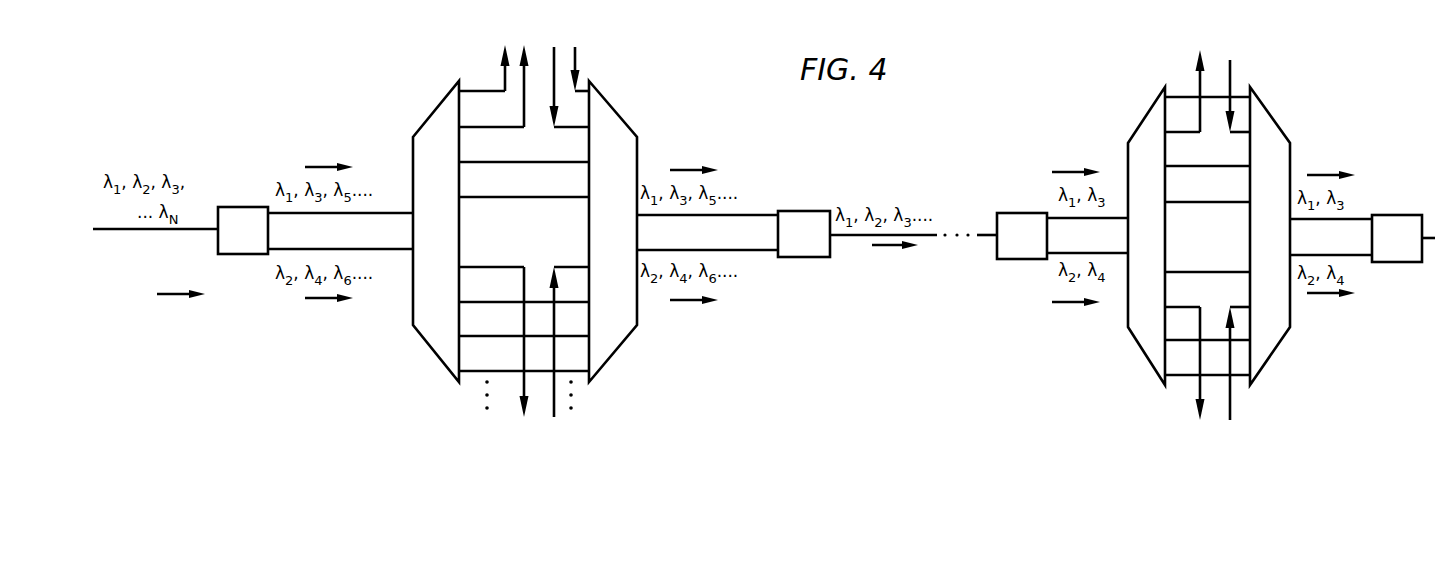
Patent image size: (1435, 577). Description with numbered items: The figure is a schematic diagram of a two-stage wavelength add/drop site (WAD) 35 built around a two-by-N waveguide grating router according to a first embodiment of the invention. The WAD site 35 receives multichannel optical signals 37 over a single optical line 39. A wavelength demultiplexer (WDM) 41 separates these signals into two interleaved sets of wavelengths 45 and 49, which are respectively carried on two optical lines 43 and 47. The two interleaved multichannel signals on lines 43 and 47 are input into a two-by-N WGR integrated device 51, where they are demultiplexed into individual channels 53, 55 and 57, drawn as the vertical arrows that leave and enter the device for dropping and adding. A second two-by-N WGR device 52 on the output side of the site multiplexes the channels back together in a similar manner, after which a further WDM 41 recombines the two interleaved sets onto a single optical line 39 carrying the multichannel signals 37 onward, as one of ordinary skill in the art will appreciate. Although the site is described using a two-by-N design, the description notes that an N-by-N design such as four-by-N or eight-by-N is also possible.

The wavelength add/drop site 35 is at (851, 217).
The multichannel optical signals 37 is at (167, 297).
The single optical line 39 is at (160, 231).
The wavelength demultiplexer 41 is at (241, 207).
The optical line 43 is at (403, 213).
The interleaved set of wavelengths 45 is at (313, 166).
The optical line 47 is at (278, 249).
The interleaved set of wavelengths 49 is at (313, 300).
The 2×N WGR integrated device 51 is at (434, 112).
The 2xN optical multiplexer unit 52 is at (614, 112).
The channel 53 is at (501, 50).
The channel 55 is at (525, 85).
The channel 57 is at (526, 384).